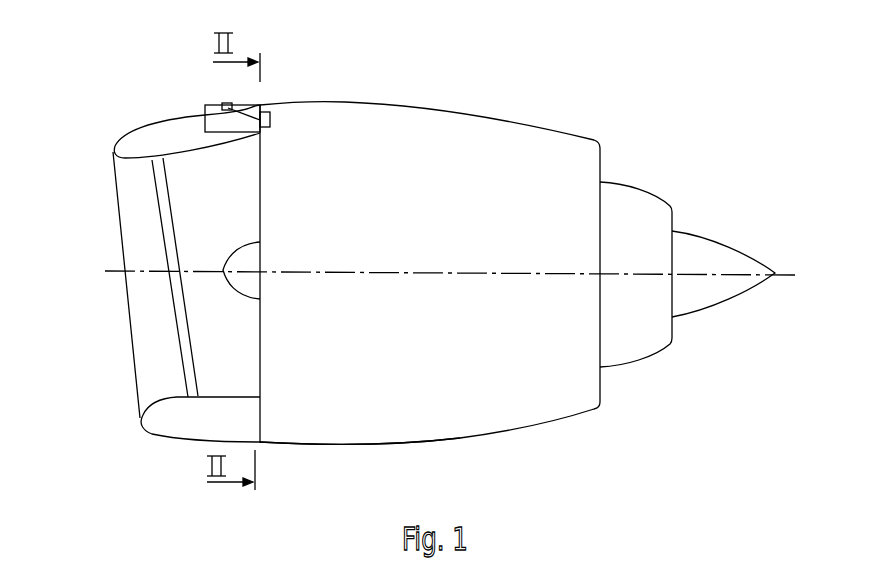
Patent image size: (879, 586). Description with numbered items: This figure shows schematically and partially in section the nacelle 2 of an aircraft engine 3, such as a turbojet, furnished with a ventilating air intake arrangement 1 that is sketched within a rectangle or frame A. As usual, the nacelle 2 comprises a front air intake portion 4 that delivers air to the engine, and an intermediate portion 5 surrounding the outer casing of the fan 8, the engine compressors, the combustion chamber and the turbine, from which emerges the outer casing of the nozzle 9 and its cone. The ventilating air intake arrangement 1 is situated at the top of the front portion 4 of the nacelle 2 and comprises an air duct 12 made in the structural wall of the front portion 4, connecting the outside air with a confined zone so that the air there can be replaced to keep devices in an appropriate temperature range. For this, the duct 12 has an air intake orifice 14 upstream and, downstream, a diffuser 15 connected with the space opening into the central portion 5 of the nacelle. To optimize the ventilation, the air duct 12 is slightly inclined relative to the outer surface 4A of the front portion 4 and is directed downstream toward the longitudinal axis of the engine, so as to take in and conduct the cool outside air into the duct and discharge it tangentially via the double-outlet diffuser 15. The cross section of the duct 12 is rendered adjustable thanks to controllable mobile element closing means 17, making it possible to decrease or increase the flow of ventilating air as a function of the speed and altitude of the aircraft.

The ventilating air intake arrangement 1 is at (209, 123).
The nacelle 2 is at (338, 96).
The aircraft engine 3 is at (227, 344).
The front air intake portion 4 is at (178, 423).
The outer surface 4A is at (205, 118).
The intermediate portion 5 is at (327, 432).
The fan 8 is at (231, 257).
The nozzle 9 is at (673, 322).
The air duct 12 is at (241, 111).
The air intake orifice 14 is at (203, 110).
The diffuser 15 is at (268, 112).
The controllable mobile element closing means 17 is at (229, 103).
The frame A is at (117, 141).